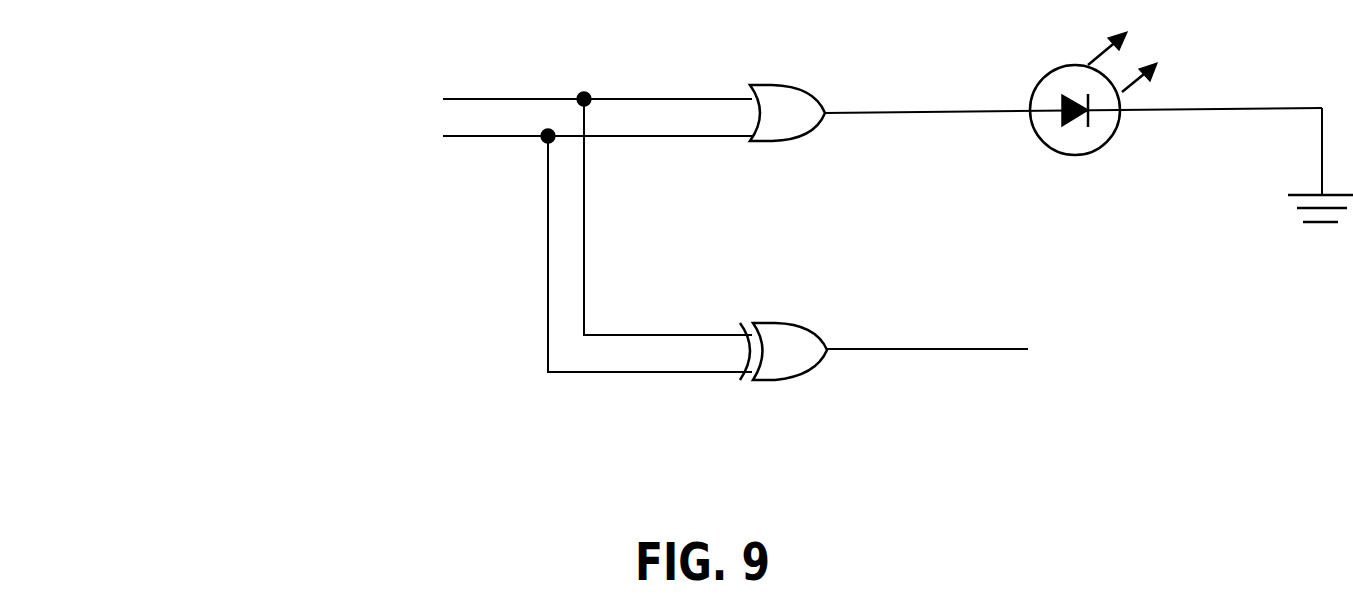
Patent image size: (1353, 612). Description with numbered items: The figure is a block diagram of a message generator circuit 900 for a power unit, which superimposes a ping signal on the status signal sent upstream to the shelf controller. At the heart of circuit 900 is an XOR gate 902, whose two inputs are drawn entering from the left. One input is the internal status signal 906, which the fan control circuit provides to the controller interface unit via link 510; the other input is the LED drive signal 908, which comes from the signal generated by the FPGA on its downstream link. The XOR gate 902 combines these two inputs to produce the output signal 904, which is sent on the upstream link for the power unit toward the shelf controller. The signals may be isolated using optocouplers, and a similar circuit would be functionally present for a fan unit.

The circuit 900 is at (962, 457).
The XOR gate 902 is at (793, 340).
The output signal 904 is at (1157, 375).
The internal status signal 906 is at (482, 137).
The LED drive signal 908 is at (482, 98).
The link 510 is at (422, 252).